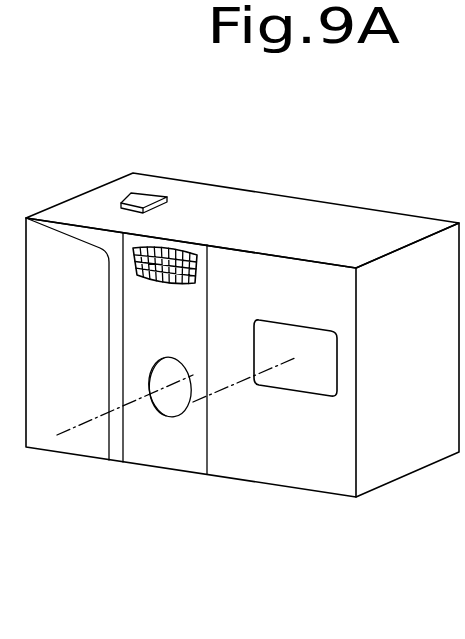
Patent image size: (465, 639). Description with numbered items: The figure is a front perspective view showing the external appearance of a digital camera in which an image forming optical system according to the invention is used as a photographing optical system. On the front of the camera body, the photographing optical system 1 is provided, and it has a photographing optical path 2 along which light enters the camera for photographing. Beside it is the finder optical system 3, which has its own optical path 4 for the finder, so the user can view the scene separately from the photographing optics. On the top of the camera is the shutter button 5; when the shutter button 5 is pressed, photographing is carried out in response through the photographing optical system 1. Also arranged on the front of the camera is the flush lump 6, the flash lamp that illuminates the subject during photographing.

The photographing optical system 1 is at (174, 400).
The photographing optical path 2 is at (113, 460).
The finder optical system 3 is at (317, 365).
The optical path for finder 4 is at (233, 385).
The shutter button 5 is at (147, 198).
The flush lump 6 is at (160, 246).